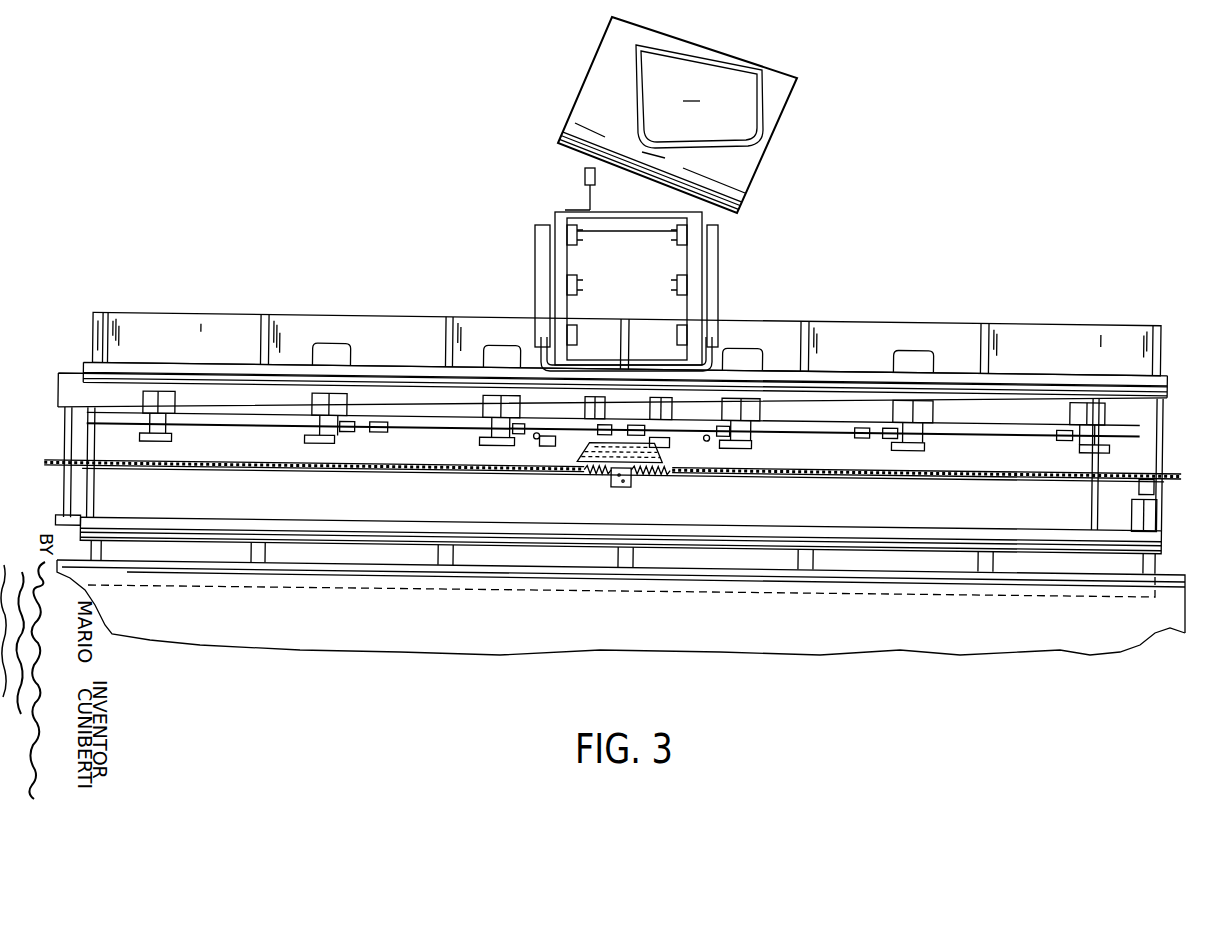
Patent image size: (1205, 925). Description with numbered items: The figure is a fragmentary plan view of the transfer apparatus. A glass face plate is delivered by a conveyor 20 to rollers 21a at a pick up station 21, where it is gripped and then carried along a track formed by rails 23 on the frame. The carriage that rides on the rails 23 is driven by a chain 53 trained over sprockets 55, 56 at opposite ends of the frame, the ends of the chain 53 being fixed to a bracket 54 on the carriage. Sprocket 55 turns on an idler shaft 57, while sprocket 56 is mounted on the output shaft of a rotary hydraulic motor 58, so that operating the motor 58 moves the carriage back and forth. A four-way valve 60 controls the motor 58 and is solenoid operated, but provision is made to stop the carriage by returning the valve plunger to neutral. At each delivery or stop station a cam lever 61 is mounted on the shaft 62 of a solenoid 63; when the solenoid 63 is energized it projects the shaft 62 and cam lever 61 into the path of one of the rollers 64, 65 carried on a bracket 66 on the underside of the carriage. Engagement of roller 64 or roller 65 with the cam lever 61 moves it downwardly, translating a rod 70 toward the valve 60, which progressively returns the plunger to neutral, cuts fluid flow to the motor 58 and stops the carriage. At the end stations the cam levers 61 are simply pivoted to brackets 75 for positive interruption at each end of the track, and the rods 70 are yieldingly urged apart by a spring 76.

The conveyor 20 is at (598, 92).
The pick up station 21 is at (535, 243).
The rollers 21a is at (680, 293).
The rails 23 is at (1017, 382).
The chain 53 is at (352, 468).
The bracket 54 is at (617, 487).
The sprocket 55 is at (53, 467).
The sprocket 56 is at (1153, 474).
The idler shaft 57 is at (66, 493).
The rotary hydraulic motor 58 is at (1148, 514).
The four-way valve 60 is at (657, 445).
The cam lever 61 is at (164, 437).
The shaft 62 is at (327, 418).
The solenoid 63 is at (320, 348).
The roller 64 is at (537, 436).
The roller 65 is at (708, 436).
The bracket 66 is at (550, 443).
The rod 70 is at (222, 423).
The bracket 75 is at (156, 397).
The spring 76 is at (623, 437).